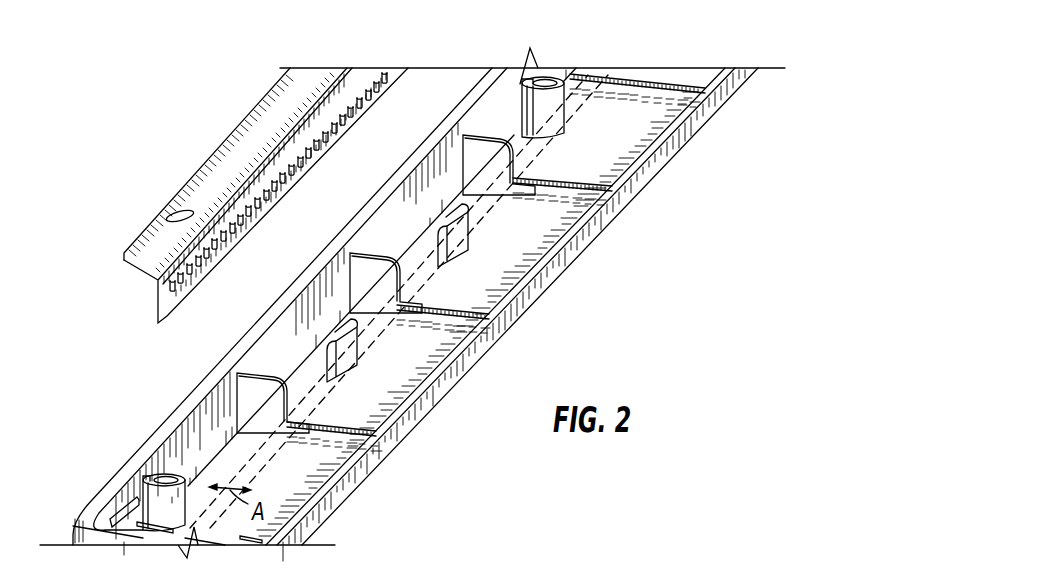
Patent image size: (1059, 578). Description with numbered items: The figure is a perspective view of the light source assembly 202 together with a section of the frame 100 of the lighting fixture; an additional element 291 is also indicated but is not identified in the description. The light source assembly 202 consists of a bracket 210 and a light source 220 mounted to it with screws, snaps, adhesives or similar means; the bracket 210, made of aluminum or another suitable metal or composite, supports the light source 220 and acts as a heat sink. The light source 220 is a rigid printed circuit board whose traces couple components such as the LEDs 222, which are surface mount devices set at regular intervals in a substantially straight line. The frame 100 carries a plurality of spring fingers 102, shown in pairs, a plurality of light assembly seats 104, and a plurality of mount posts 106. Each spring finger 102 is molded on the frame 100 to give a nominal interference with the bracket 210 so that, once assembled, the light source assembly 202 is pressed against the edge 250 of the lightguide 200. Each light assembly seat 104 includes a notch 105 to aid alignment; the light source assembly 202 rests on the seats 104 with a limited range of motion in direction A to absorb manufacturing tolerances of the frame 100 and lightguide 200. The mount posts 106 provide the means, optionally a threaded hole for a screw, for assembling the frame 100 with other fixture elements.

The carrier assembly 291 is at (118, 362).
The frame 100 is at (153, 436).
The edge 250 is at (260, 445).
The lightguide 200 is at (223, 470).
The notch 105 is at (305, 425).
The light assembly seat 104 is at (257, 393).
The spring finger 102 is at (452, 221).
The mount post 106 is at (152, 476).
The light source assembly 202 is at (190, 150).
The bracket 210 is at (153, 242).
The light source 220 is at (216, 266).
The LEDs 222 is at (238, 236).